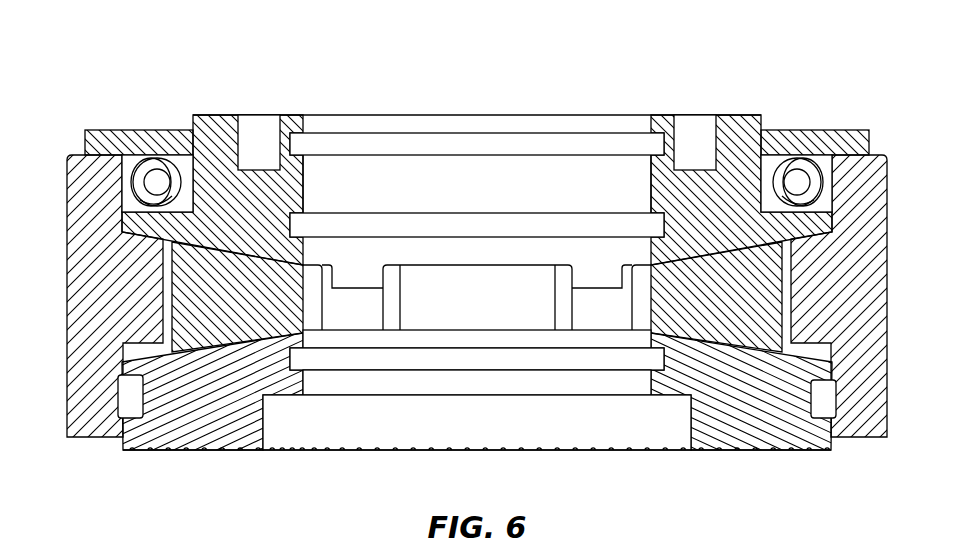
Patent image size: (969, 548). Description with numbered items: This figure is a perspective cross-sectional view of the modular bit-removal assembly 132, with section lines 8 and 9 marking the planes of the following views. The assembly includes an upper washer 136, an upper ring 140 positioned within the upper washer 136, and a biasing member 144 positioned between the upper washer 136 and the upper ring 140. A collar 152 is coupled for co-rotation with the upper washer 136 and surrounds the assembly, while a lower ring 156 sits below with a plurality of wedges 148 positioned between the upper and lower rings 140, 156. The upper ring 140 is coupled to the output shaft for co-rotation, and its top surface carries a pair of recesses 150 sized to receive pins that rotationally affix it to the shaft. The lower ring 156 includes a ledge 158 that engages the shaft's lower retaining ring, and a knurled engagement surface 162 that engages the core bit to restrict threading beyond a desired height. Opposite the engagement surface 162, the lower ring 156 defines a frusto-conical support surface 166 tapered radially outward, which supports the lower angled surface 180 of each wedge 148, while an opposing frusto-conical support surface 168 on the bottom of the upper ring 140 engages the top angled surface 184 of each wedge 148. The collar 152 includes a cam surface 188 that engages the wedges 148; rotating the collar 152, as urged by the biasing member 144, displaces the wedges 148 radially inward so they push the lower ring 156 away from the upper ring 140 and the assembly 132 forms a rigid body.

The bit-removal assembly 132 is at (490, 102).
The upper washer 136 is at (793, 128).
The upper ring 140 is at (298, 126).
The biasing member 144 is at (140, 165).
The wedges 148 is at (217, 303).
The recesses 150 is at (257, 126).
The collar 152 is at (890, 352).
The lower ring 156 is at (787, 420).
The ledge 158 is at (345, 397).
The engagement surface 162 is at (713, 452).
The frusto-conical support surface 166 is at (157, 352).
The opposing frusto-conical support surface 168 is at (213, 266).
The lower angled surface 180 is at (757, 347).
The top angled surface 184 is at (690, 235).
The cam surface 188 is at (768, 282).
The section line 8 is at (25, 291).
The section line 9 is at (25, 172).